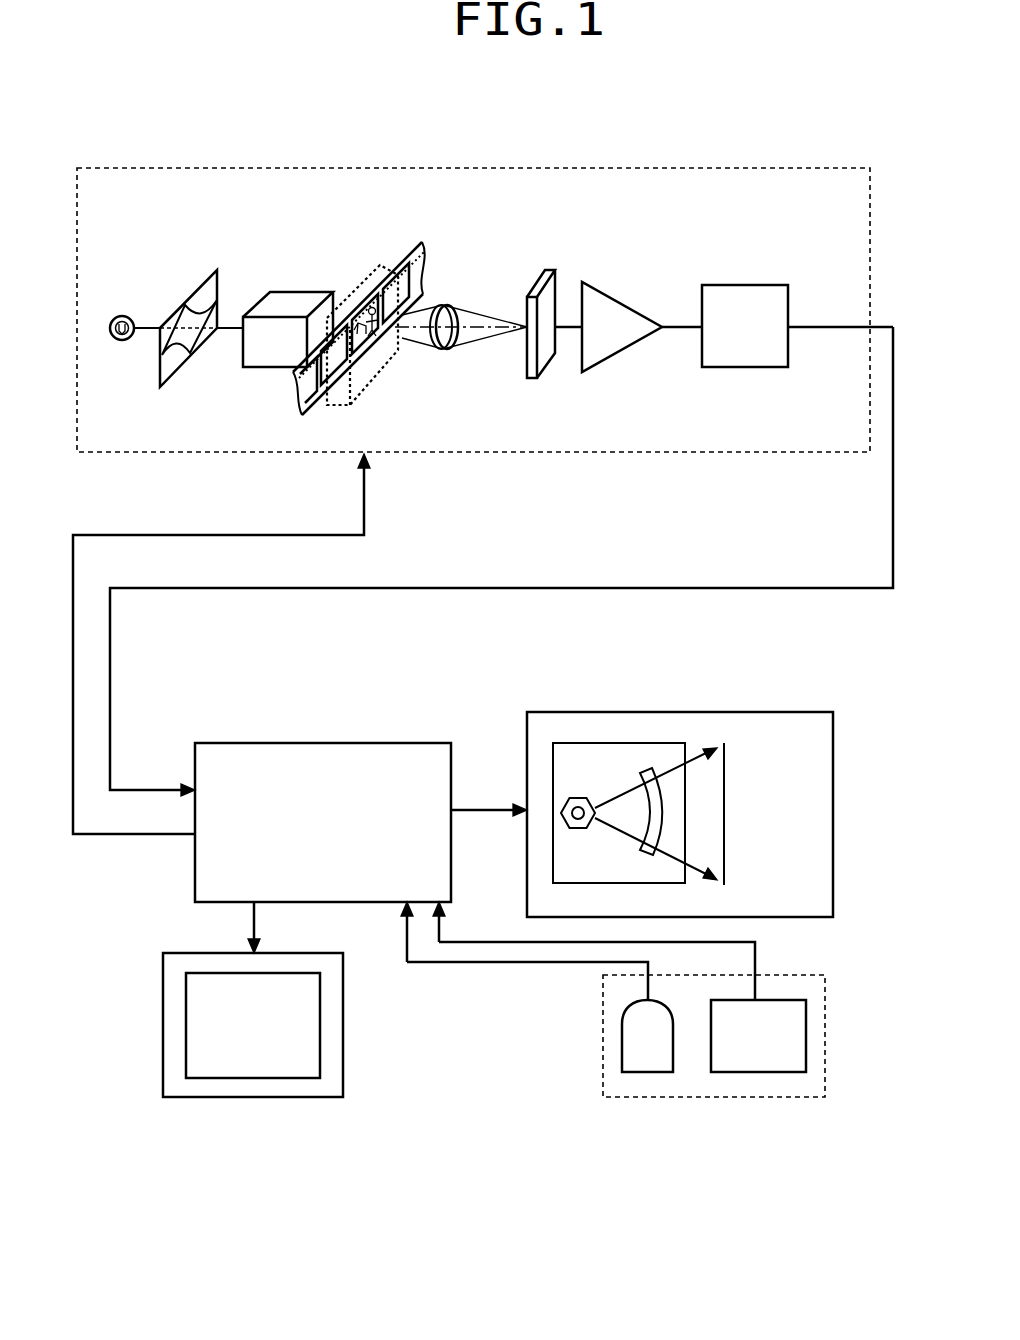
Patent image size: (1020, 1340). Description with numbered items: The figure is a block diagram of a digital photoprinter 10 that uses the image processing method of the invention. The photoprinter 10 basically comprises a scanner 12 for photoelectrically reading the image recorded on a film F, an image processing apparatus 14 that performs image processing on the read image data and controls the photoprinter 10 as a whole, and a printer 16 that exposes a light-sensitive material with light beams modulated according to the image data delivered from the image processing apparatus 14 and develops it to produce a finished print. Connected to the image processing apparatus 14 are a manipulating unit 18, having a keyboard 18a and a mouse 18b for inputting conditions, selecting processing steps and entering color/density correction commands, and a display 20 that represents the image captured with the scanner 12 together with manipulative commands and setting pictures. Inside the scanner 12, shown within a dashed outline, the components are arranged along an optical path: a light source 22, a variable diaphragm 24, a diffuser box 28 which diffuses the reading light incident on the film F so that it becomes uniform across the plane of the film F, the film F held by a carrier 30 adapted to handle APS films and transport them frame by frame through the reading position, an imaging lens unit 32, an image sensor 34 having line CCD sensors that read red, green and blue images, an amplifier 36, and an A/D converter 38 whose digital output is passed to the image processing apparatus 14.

The photoprinter 10 is at (744, 136).
The scanner 12 is at (297, 165).
The image processing apparatus 14 is at (319, 743).
The printer 16 is at (673, 712).
The manipulating unit 18 is at (714, 1086).
The keyboard 18a is at (760, 1072).
The mouse 18b is at (643, 1072).
The display 20 is at (243, 1097).
The light source 22 is at (118, 313).
The variable diaphragm 24 is at (197, 291).
The diffuser box 28 is at (283, 314).
The carrier 30 is at (398, 350).
The imaging lens unit 32 is at (448, 303).
The image sensor 34 is at (543, 297).
The amplifier 36 is at (622, 350).
The A/D converter 38 is at (731, 339).
The film F is at (412, 250).